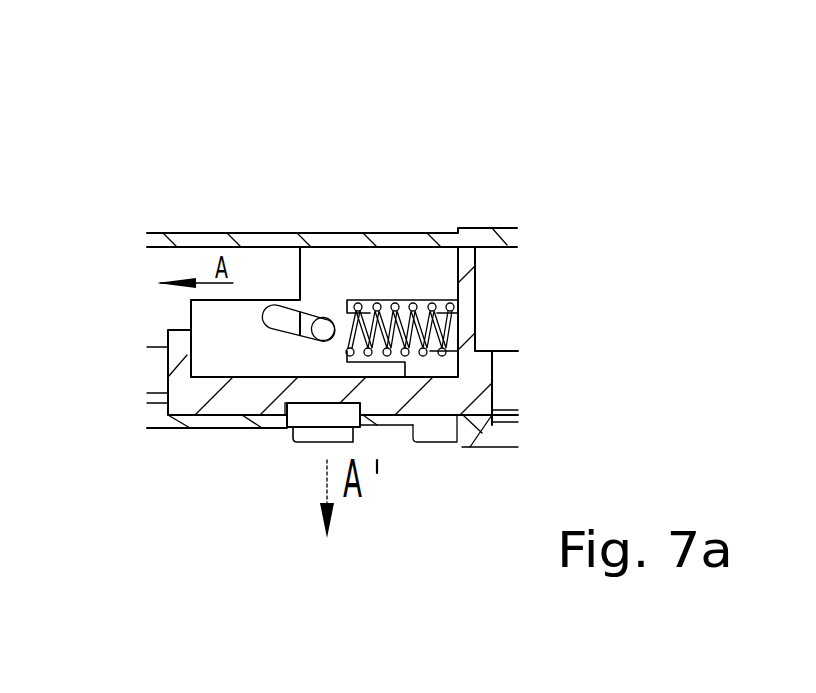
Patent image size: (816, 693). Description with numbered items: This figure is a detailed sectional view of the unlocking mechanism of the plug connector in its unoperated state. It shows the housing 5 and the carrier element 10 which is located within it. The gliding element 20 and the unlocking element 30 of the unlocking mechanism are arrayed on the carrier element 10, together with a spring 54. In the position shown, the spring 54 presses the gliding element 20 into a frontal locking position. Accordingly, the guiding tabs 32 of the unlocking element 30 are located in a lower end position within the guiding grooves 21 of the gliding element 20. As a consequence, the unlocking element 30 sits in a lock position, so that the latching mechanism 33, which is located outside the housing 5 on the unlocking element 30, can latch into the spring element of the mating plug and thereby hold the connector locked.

The housing 5 is at (186, 233).
The carrier element 10 is at (240, 398).
The gliding element 20 is at (350, 272).
The guiding grooves 21 is at (276, 316).
The unlocking element 30 is at (347, 420).
The guiding tabs 32 is at (323, 328).
The latching mechanism 33 is at (303, 442).
The spring 54 is at (392, 310).